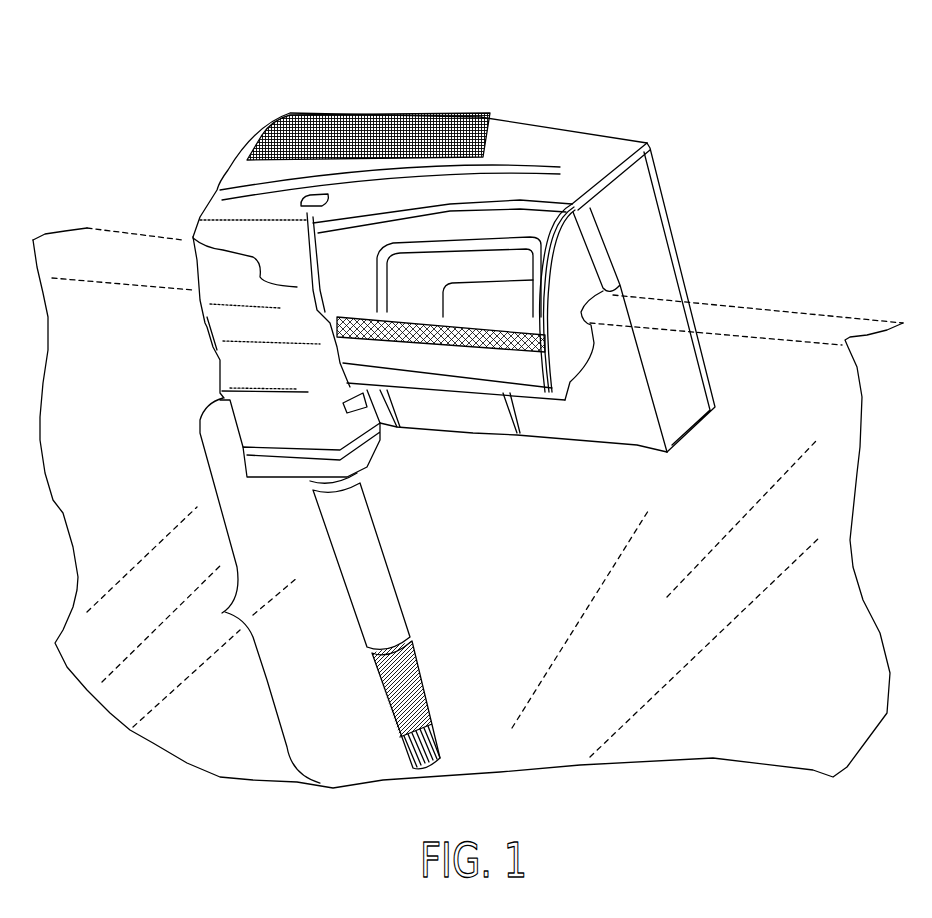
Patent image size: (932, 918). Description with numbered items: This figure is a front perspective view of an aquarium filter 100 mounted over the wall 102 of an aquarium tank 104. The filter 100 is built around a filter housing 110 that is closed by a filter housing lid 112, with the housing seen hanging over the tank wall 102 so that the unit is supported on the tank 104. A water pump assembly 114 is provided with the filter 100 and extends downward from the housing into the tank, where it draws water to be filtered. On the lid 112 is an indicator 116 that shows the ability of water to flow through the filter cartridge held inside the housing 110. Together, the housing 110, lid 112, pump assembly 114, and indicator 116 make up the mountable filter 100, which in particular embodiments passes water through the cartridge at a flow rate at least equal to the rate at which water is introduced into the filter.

The aquarium filter 100 is at (405, 406).
The wall 102 is at (797, 694).
The aquarium tank 104 is at (755, 303).
The filter housing 110 is at (607, 248).
The filter housing lid 112 is at (490, 150).
The water pump assembly 114 is at (224, 612).
The indicator 116 is at (323, 187).